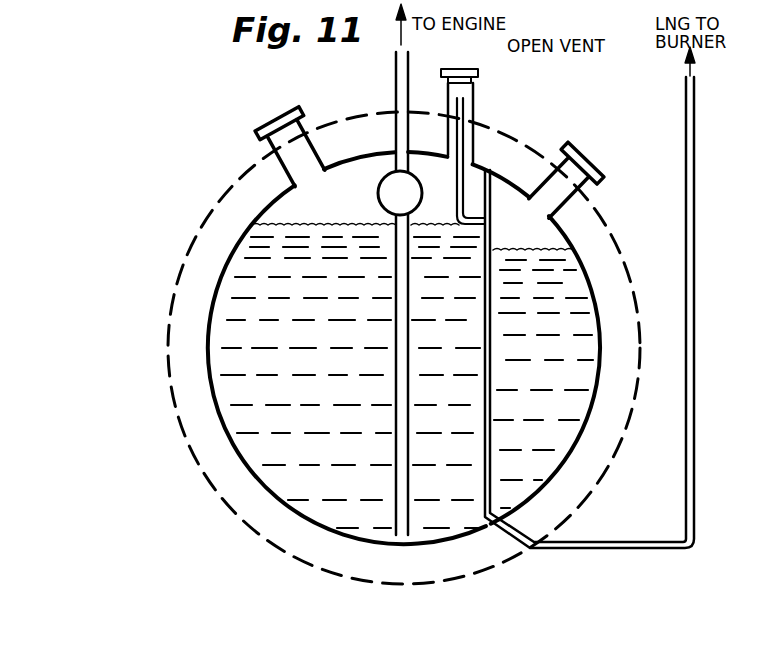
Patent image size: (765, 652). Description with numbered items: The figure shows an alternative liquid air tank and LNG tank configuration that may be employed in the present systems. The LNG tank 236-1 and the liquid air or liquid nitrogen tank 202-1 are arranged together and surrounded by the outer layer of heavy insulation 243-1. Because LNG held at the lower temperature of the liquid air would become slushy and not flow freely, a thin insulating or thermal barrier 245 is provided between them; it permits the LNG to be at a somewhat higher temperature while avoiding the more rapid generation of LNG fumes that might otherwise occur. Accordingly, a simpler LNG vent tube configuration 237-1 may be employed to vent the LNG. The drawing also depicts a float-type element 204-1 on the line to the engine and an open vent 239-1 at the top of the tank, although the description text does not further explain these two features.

The liquid air or liquid nitrogen tank 202-1 is at (230, 393).
The float valve 204-1 is at (391, 172).
The LNG tank 236-1 is at (553, 440).
The LNG vent tube configuration 237-1 is at (463, 145).
The open vent 239-1 is at (474, 90).
The outer layer of heavy insulation 243-1 is at (240, 517).
The thin insulating or thermal barrier 245 is at (487, 482).